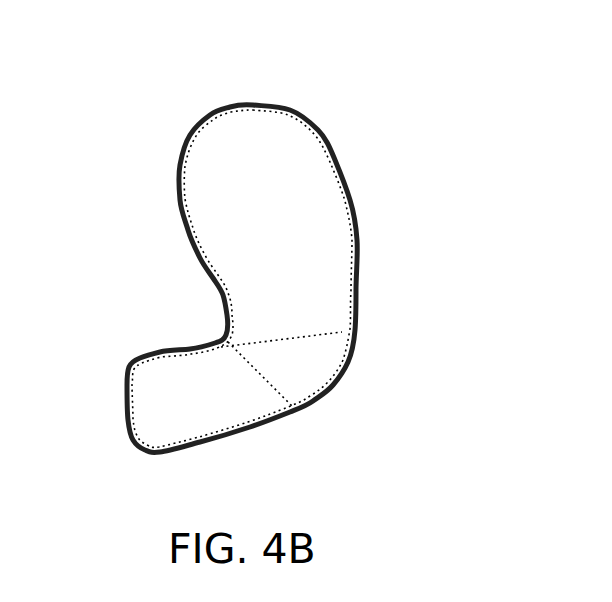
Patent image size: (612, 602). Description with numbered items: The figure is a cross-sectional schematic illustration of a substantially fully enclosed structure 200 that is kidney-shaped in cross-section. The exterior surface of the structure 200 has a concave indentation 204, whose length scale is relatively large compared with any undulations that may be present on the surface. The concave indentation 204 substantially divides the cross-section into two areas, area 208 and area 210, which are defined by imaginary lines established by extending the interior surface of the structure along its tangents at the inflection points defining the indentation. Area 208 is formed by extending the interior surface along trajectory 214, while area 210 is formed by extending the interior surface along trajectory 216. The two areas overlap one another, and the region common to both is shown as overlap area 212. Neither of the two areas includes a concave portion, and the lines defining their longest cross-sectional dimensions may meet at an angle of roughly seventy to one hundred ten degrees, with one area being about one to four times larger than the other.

The substantially fully enclosed structure 200 is at (94, 92).
The concave indentation 204 is at (206, 322).
The area 208 is at (199, 396).
The area 210 is at (281, 230).
The overlap area 212 is at (321, 374).
The trajectory 214 is at (282, 340).
The trajectory 216 is at (282, 387).